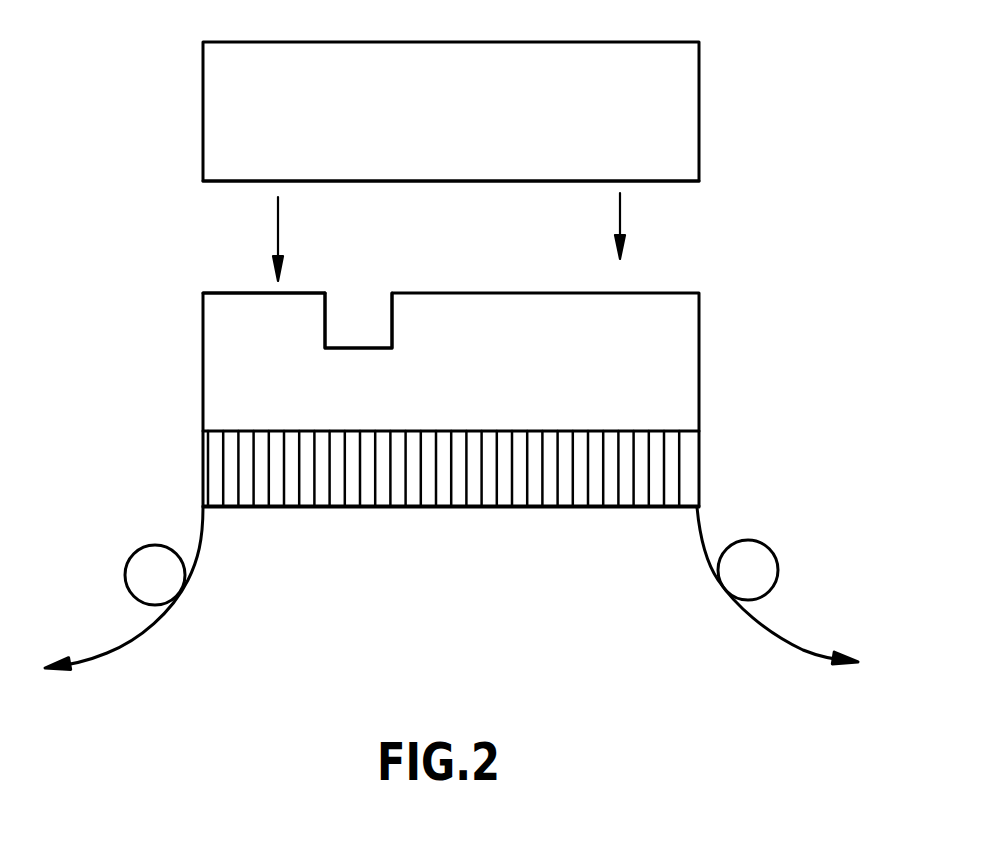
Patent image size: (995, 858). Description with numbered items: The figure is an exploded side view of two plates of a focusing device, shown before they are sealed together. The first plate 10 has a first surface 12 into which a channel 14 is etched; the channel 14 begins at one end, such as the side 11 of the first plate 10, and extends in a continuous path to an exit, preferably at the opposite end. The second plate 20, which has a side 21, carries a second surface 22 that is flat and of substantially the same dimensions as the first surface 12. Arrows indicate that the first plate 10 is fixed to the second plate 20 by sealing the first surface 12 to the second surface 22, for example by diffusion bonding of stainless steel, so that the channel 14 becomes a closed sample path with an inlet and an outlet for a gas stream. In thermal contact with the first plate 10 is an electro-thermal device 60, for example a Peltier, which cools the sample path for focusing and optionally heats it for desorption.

The first plate 10 is at (448, 359).
The side of the first plate 11 is at (385, 359).
The first surface 12 is at (258, 289).
The channel 14 is at (367, 308).
The second plate 20 is at (470, 126).
The side of the second plate 21 is at (250, 113).
The second surface 22 is at (637, 181).
The electro-thermal device 60 is at (706, 468).